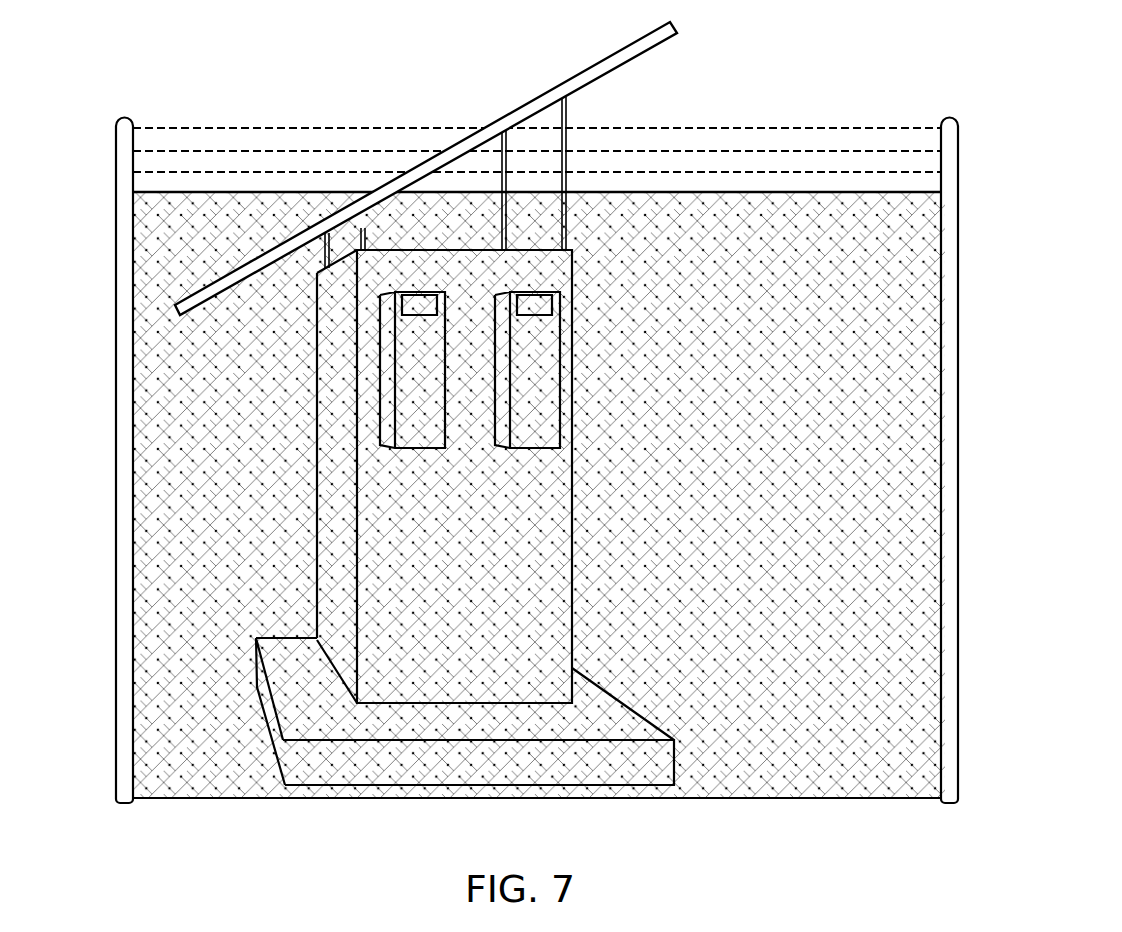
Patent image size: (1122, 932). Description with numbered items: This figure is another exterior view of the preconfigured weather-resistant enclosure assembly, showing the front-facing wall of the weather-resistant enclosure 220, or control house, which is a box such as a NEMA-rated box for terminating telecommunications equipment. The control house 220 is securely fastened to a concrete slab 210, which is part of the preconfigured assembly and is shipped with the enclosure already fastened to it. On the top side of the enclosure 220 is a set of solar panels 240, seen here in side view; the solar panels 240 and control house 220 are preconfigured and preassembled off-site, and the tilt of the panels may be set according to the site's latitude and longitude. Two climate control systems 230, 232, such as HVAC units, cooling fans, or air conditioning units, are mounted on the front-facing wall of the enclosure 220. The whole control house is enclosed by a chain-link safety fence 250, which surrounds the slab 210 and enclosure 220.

The concrete slab 210 is at (343, 780).
The weather-resistant enclosure 220 is at (542, 697).
The climate control system 230 is at (417, 293).
The climate control system 232 is at (546, 293).
The set of solar panels 240 is at (522, 108).
The chain-link safety fence 250 is at (127, 456).